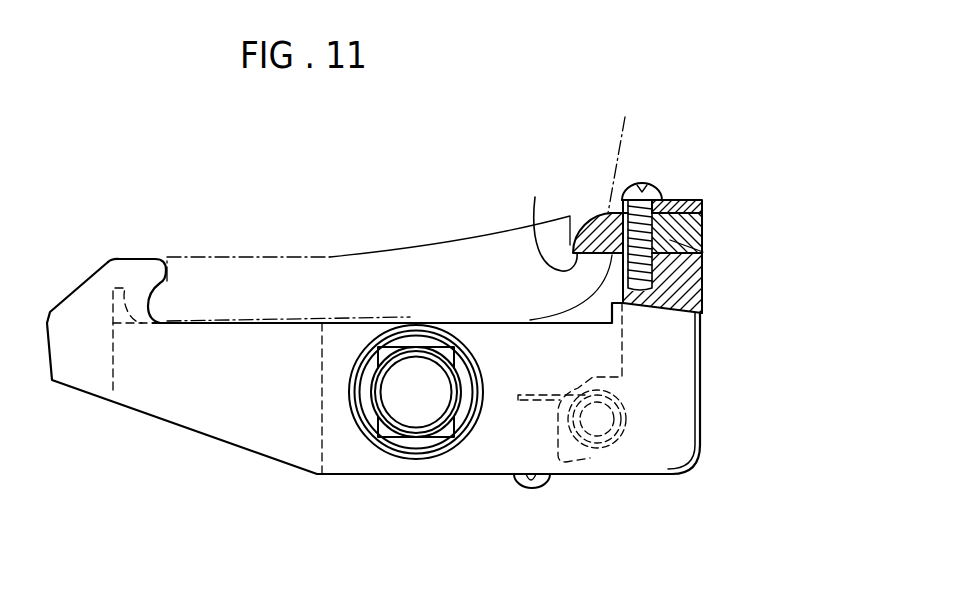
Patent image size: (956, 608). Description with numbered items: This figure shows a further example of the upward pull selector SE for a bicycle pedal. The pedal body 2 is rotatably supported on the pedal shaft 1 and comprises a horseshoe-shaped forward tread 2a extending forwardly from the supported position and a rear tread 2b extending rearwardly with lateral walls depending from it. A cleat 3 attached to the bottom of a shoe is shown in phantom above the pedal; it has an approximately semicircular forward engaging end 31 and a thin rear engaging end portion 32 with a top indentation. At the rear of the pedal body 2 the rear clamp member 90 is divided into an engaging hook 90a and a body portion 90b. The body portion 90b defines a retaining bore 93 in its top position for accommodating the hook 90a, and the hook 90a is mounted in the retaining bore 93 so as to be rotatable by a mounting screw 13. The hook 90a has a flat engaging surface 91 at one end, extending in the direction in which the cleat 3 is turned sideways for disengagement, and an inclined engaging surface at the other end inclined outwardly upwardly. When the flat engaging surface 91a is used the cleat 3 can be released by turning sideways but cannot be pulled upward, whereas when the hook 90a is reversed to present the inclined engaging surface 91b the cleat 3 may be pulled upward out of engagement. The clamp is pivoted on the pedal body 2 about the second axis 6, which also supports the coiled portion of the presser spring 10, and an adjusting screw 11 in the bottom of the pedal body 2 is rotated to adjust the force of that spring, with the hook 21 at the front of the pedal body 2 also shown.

The pedal shaft 1 is at (417, 418).
The pedal body 2 is at (463, 320).
The forward tread 2a is at (226, 323).
The rear tread 2b is at (523, 320).
The cleat 3 is at (352, 253).
The second axis 6 is at (608, 425).
The presser spring 10 is at (587, 458).
The adjusting screw 11 is at (515, 483).
The mounting screw 13 is at (627, 188).
The hook portion 21 is at (157, 262).
The forward engaging end 31 is at (127, 292).
The rear engaging end portion 32 is at (622, 151).
The rear clamp member 90 is at (700, 197).
The engaging hook 90a is at (668, 200).
The body portion 90b is at (702, 313).
The flat engaging surface 91 is at (593, 220).
The flat engaging surface 91a is at (545, 218).
The inclined engaging surface 91b is at (703, 252).
The retaining bore 93 is at (685, 200).
The upward pull selector SE is at (713, 70).